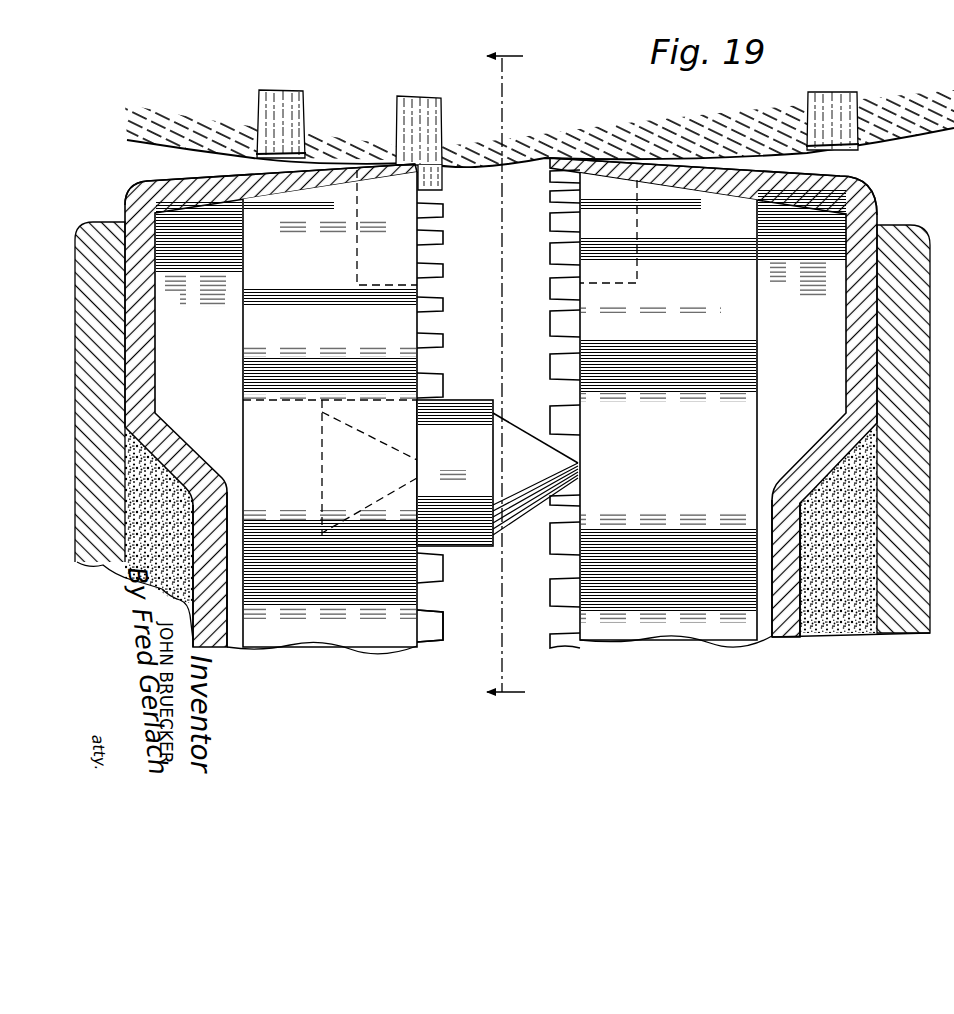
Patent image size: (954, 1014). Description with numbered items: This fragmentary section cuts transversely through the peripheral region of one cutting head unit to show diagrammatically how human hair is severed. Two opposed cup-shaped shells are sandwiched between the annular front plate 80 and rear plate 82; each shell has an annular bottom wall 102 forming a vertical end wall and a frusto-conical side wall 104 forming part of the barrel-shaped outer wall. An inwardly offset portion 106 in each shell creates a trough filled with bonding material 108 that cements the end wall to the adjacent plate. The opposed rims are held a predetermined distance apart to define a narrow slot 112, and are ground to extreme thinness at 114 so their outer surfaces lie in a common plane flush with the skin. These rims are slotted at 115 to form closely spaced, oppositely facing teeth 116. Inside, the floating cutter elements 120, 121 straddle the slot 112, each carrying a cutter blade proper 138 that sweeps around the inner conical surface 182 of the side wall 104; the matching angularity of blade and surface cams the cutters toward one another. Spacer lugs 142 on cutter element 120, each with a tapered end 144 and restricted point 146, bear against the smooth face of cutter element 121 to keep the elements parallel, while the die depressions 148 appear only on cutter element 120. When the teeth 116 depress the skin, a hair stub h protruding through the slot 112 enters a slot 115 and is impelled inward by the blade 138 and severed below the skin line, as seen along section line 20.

The section line 20- 20 is at (506, 377).
The front plate 80 is at (108, 241).
The rear plate 82 is at (912, 388).
The bottom wall 102 is at (142, 374).
The side wall 104 is at (170, 180).
The inwardly offset portion 106 is at (215, 510).
The bonding material 108 is at (160, 582).
The slot 112 is at (489, 198).
The ground rim portion 114 is at (433, 627).
The slot between teeth 115 is at (337, 182).
The teeth 116 is at (437, 572).
The cutter element 120 is at (260, 330).
The cutter element 121 is at (762, 414).
The cutter blade proper 138 is at (501, 413).
The spacer lug 142 is at (440, 399).
The tapered end 144 is at (510, 437).
The restricted point 146 is at (580, 470).
The die depression 148 is at (267, 398).
The inner conical surface 182 is at (680, 183).
The hair stub h is at (303, 97).